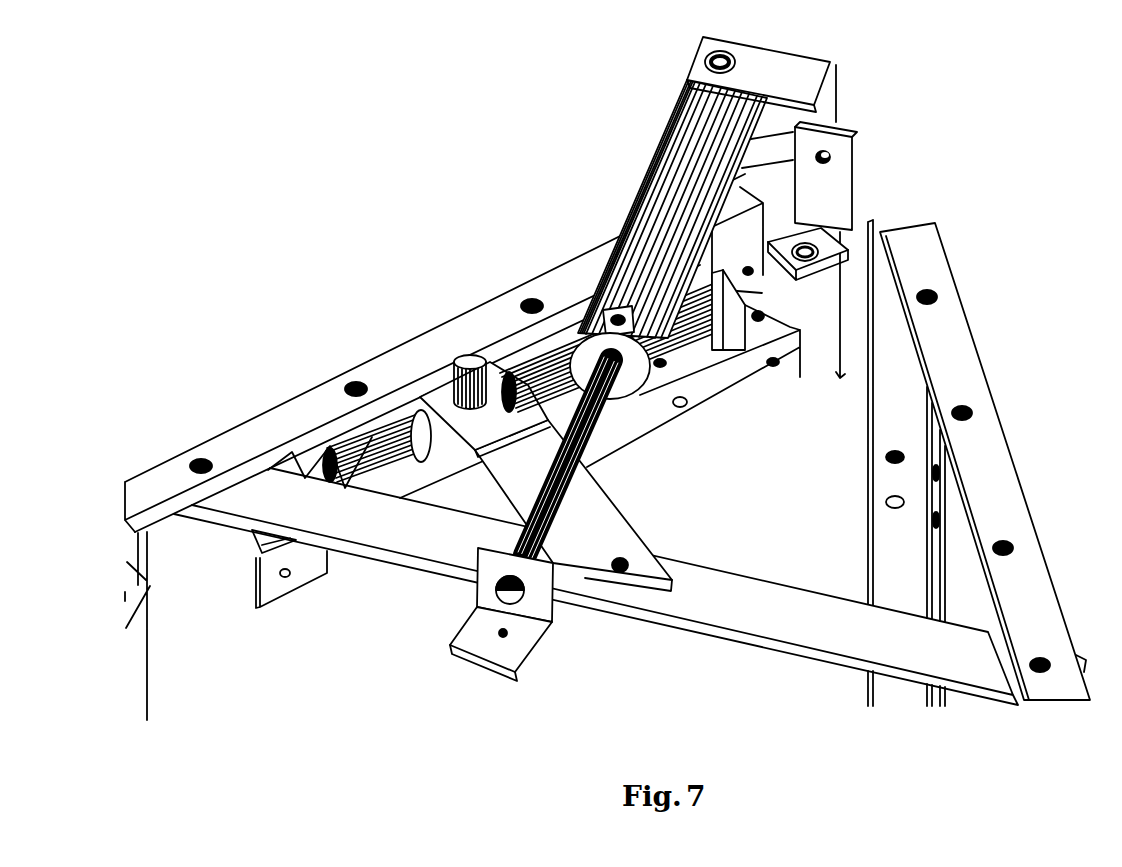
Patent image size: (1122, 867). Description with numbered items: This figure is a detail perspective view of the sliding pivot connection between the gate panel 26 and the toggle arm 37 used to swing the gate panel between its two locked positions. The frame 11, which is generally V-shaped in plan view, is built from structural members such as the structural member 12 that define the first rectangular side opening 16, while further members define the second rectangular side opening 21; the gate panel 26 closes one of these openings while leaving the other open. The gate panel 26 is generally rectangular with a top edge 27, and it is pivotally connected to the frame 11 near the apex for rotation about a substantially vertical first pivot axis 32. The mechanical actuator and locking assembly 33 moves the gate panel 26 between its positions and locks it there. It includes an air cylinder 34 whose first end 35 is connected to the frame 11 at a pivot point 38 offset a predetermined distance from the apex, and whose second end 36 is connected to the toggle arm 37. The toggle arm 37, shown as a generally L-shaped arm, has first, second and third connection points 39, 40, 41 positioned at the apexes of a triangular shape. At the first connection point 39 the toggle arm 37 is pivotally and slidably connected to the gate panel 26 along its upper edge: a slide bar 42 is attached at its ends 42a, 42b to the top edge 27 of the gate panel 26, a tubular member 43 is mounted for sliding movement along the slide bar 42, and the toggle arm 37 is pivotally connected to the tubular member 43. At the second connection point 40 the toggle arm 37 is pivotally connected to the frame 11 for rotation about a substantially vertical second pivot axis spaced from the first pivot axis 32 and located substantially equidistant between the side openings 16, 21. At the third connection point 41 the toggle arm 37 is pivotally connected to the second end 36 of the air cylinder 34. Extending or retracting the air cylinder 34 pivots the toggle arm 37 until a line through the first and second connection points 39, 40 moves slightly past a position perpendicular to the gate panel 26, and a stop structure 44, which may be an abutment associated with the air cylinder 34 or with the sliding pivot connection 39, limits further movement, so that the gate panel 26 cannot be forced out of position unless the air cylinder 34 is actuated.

The frame 11 is at (975, 345).
The structural member 12 is at (242, 437).
The first rectangular side opening 16 is at (387, 416).
The second rectangular side opening 21 is at (968, 548).
The gate panel 26 is at (318, 567).
The top edge 27 is at (714, 362).
The first pivot axis 32 is at (812, 245).
The mechanical actuator and locking assembly 33 is at (697, 462).
The air cylinder 34 is at (645, 190).
The first end 35 is at (765, 112).
The second end 36 is at (498, 588).
The toggle arm 37 is at (617, 523).
The pivot point 38 is at (706, 62).
The first connection point 39 is at (452, 350).
The second connection point 40 is at (628, 565).
The third connection point 41 is at (500, 636).
The slide bar 42 is at (547, 363).
The end 42a is at (732, 315).
The end 42b is at (324, 452).
The tubular member 43 is at (462, 350).
The stop structure 44 is at (321, 452).